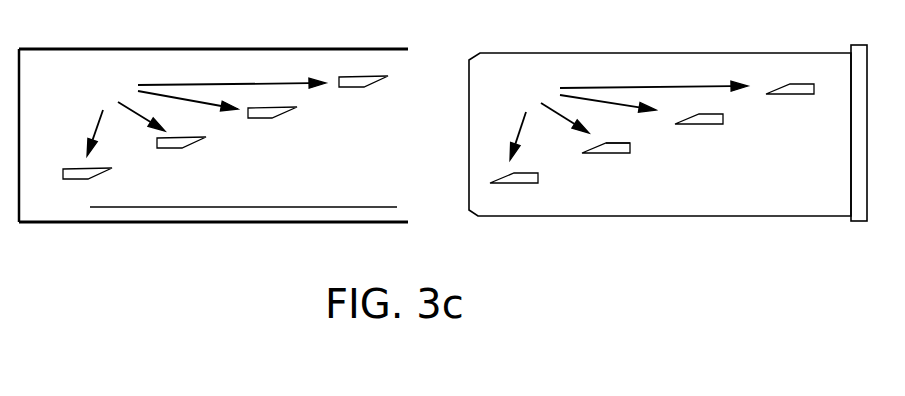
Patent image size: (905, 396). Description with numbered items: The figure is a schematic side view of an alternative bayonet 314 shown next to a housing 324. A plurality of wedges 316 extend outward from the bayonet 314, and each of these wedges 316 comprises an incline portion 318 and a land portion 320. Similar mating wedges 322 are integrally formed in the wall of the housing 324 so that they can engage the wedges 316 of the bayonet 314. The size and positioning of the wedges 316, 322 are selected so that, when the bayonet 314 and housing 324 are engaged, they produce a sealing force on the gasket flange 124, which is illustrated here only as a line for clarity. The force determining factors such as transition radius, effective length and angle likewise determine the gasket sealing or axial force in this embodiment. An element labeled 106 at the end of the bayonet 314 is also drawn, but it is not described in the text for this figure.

The end wall / plate 106 is at (858, 45).
The gasket flange 124 is at (367, 206).
The alternative bayonet 314 is at (563, 53).
The wedges 316 is at (652, 132).
The incline portion 318 is at (586, 149).
The land portion 320 is at (612, 133).
The mating wedges 322 is at (225, 127).
The housing 324 is at (150, 48).